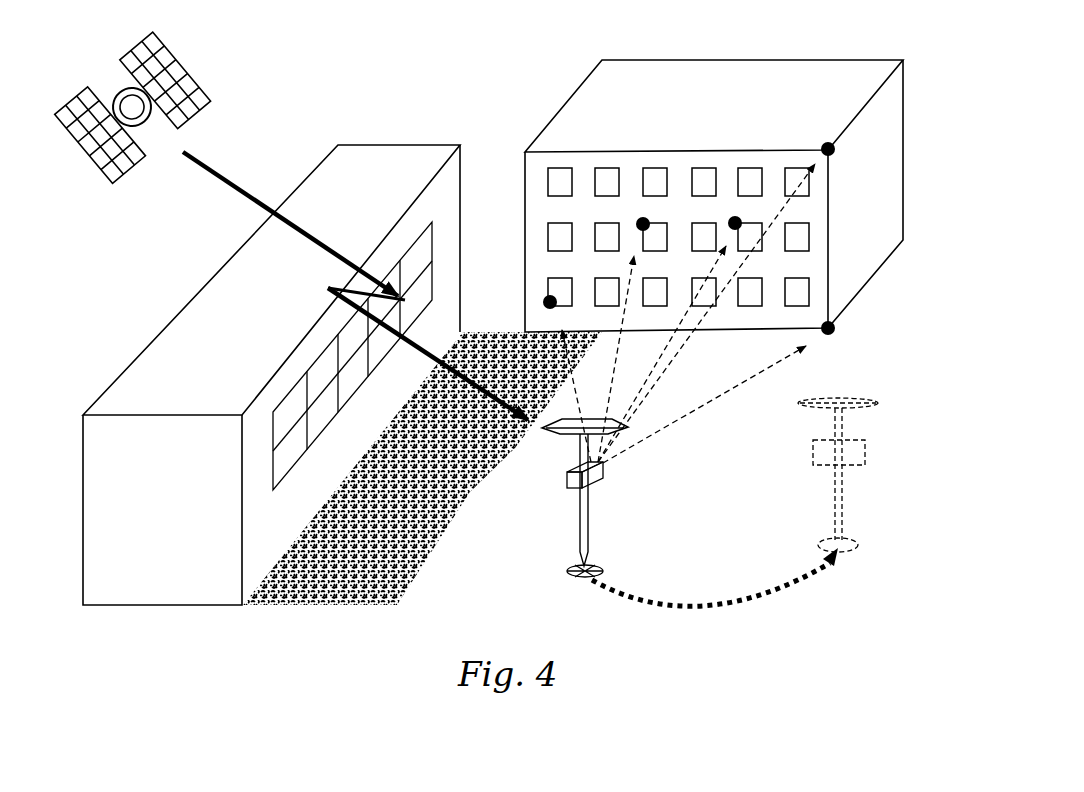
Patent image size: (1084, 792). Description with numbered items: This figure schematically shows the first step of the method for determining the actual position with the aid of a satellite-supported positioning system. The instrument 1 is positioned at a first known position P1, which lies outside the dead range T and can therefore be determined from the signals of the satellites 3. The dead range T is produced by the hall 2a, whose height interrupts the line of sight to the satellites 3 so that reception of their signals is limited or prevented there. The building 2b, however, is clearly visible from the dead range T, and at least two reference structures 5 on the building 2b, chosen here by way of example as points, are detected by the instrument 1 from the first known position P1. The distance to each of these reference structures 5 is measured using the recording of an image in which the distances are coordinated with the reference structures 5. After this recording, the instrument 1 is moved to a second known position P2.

The instrument 1 is at (593, 477).
The hall 2a is at (342, 180).
The building 2b is at (708, 78).
The satellites 3 is at (198, 87).
The reference structures 5 is at (640, 219).
The dead range T is at (418, 512).
The first known position P1 is at (588, 580).
The second known position P2 is at (833, 562).